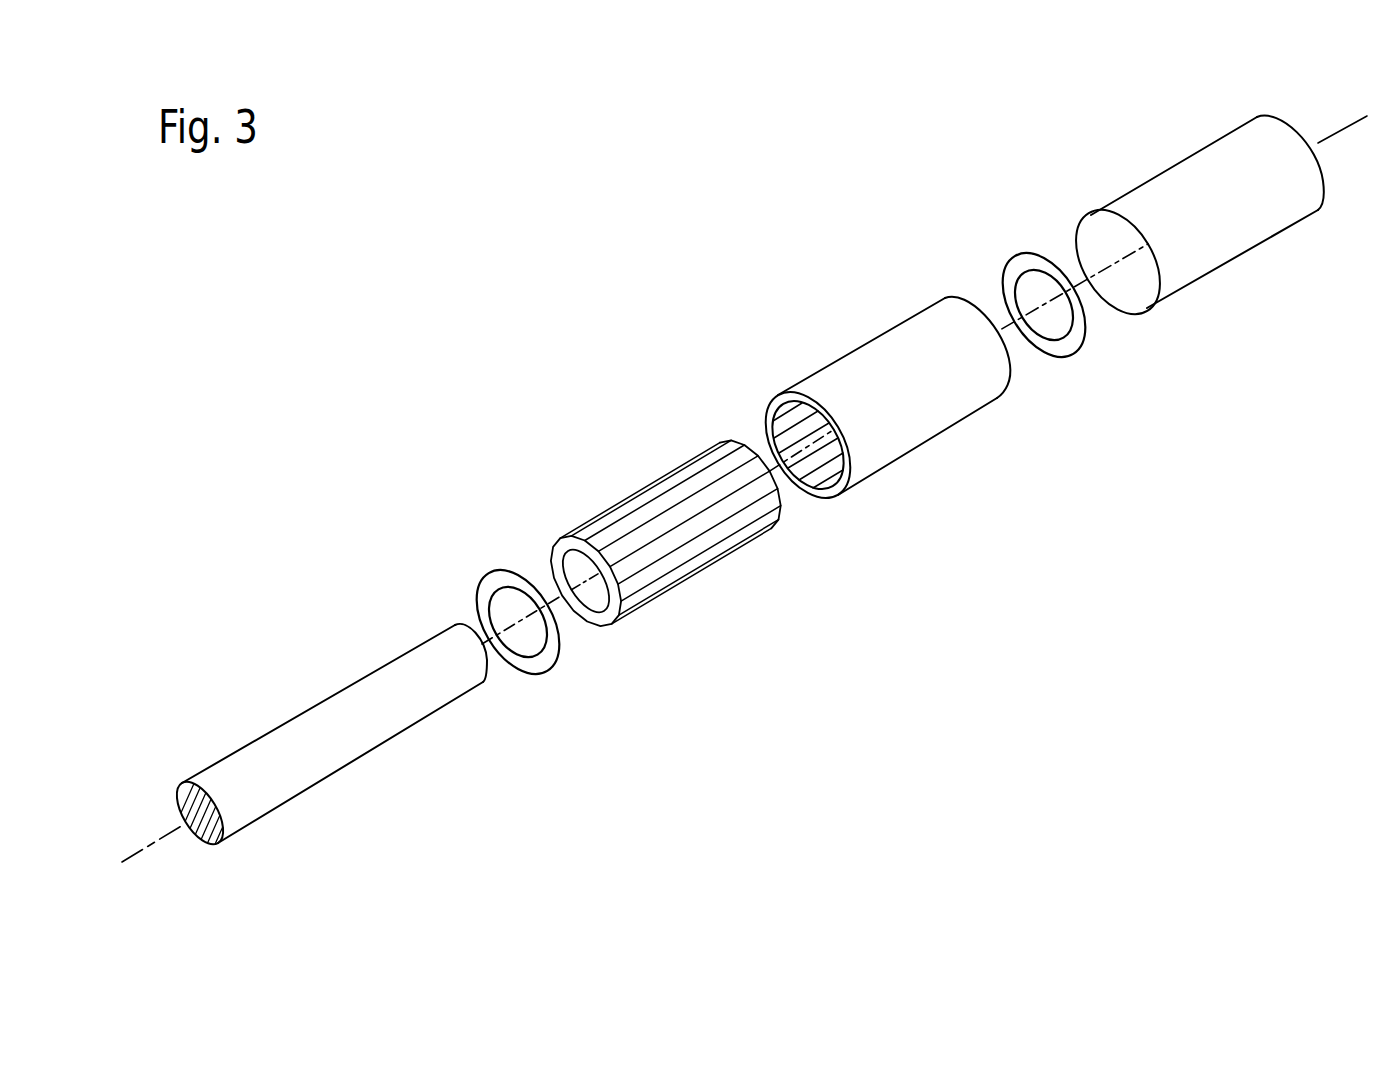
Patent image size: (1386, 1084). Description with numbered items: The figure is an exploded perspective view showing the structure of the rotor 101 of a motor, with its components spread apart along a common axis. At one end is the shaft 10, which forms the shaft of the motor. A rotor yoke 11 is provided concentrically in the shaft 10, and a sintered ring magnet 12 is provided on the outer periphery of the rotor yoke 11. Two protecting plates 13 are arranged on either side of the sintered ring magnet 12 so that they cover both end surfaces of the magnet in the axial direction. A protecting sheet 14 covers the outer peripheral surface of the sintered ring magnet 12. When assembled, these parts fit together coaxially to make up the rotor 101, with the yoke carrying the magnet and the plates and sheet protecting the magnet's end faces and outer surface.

The shaft 10 is at (333, 760).
The rotor yoke 11 is at (677, 575).
The sintered ring magnet 12 is at (910, 438).
The protecting plate 13 is at (535, 668).
The protecting sheet 14 is at (1230, 250).
The rotor 101 is at (875, 647).